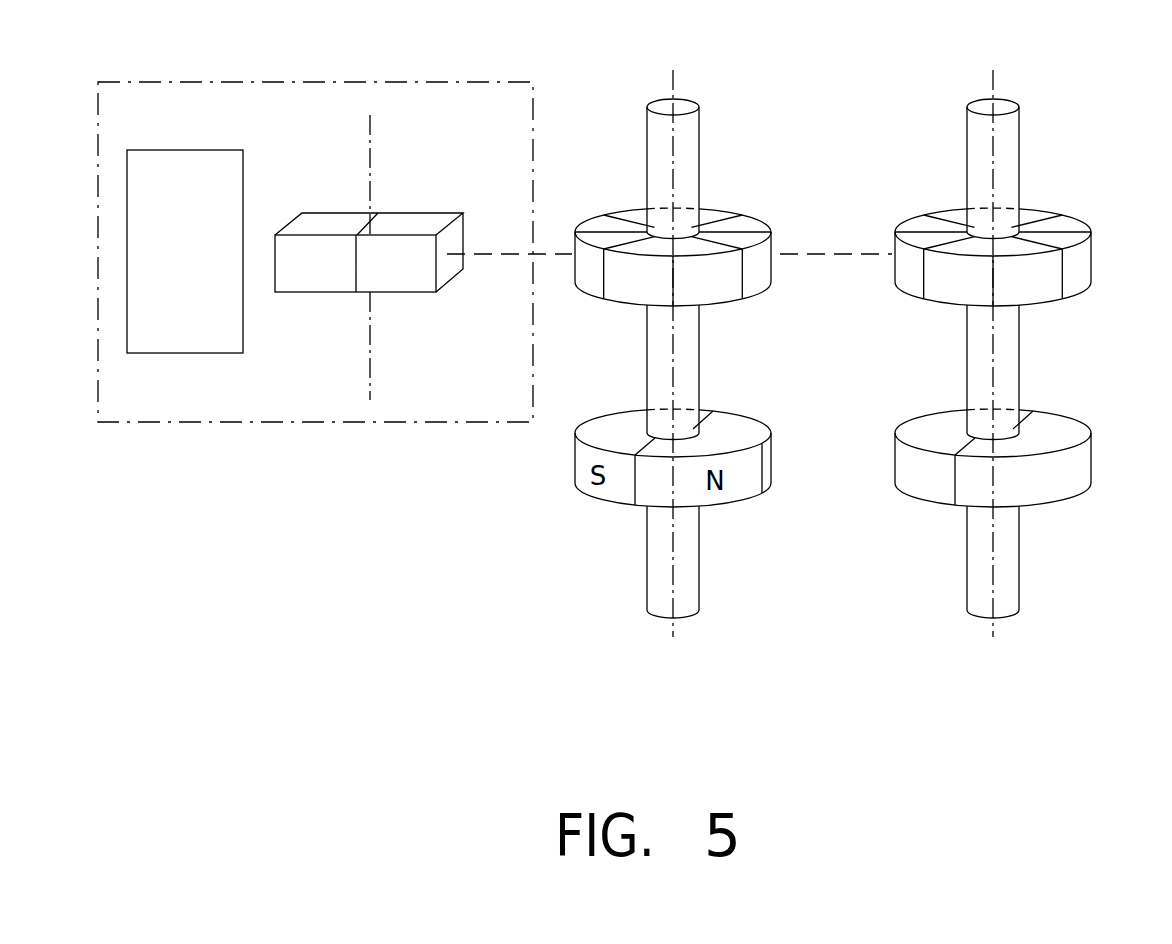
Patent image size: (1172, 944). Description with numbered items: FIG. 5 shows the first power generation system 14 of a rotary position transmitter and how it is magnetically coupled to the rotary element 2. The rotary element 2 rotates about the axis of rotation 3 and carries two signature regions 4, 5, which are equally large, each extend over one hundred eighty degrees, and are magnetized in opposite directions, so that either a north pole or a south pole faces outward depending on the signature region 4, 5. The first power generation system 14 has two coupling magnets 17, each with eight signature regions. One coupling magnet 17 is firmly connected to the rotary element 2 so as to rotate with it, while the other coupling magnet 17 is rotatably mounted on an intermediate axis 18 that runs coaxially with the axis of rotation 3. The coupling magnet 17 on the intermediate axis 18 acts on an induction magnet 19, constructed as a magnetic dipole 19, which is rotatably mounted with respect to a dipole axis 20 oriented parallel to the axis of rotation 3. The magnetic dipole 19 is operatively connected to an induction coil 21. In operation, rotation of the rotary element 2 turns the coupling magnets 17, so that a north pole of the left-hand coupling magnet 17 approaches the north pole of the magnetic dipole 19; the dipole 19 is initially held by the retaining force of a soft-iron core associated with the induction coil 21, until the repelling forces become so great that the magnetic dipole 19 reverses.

The rotary element 2 is at (994, 470).
The axis of rotation 3 is at (993, 82).
The signature region 4 is at (1060, 428).
The signature region 5 is at (927, 428).
The first power generation system 14 is at (533, 133).
The coupling magnet 17 is at (745, 210).
The intermediate axis 18 is at (672, 80).
The induction magnet 19 is at (418, 222).
The dipole axis 20 is at (368, 176).
The induction coil 21 is at (178, 150).